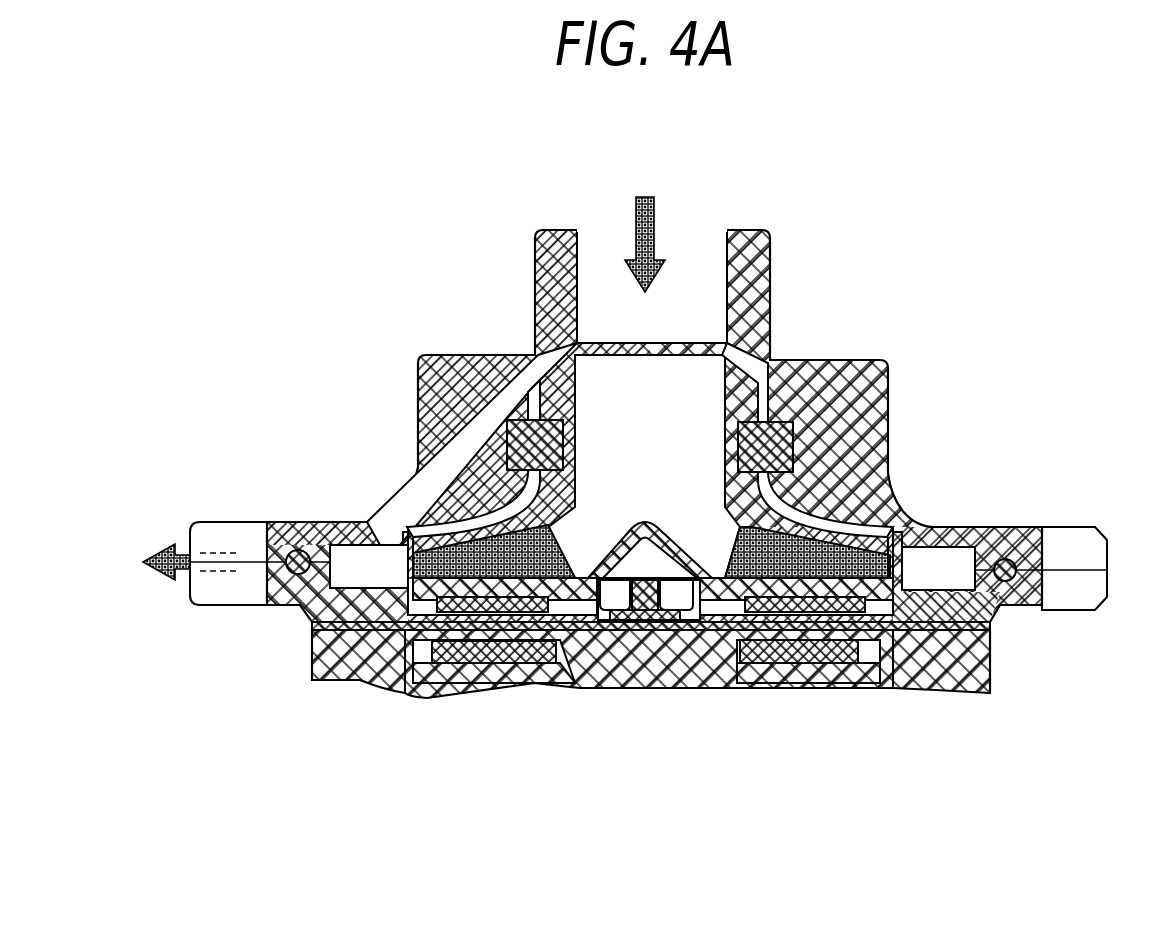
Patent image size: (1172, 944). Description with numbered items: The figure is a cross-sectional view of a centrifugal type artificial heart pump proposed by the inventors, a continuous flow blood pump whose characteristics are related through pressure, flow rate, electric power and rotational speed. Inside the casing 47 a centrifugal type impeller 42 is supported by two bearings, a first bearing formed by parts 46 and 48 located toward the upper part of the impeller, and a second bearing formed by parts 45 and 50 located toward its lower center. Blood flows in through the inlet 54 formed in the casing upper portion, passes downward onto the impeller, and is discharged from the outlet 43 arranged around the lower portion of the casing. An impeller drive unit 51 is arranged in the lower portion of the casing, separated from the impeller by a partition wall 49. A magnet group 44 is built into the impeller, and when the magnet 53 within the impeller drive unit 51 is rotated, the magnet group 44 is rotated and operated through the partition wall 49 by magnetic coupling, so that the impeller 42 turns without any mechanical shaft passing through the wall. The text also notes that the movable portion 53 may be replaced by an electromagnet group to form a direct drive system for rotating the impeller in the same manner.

The centrifugal type impeller 42 is at (840, 512).
The outlet 43 is at (400, 530).
The magnet group 44 is at (893, 607).
The bearing 45 is at (638, 622).
The bearing 46 is at (775, 400).
The casing 47 is at (447, 423).
The bearing 48 is at (797, 442).
The partition wall 49 is at (618, 622).
The bearing 50 is at (675, 622).
The impeller drive unit 51 is at (960, 664).
The magnet 53 is at (792, 665).
The inlet 54 is at (692, 243).